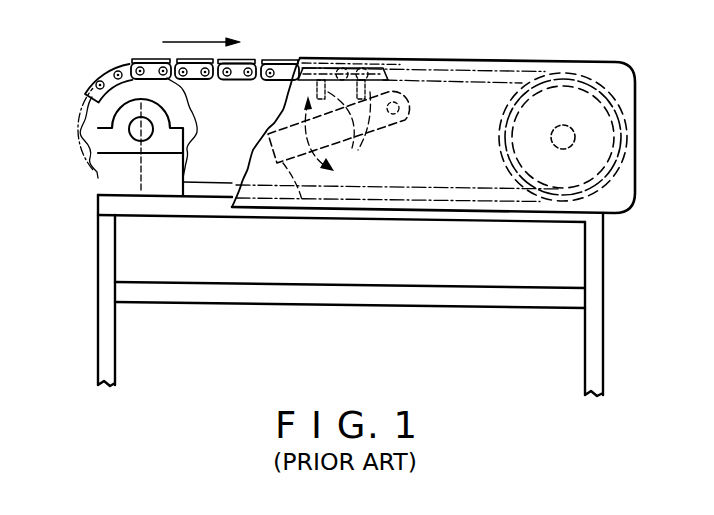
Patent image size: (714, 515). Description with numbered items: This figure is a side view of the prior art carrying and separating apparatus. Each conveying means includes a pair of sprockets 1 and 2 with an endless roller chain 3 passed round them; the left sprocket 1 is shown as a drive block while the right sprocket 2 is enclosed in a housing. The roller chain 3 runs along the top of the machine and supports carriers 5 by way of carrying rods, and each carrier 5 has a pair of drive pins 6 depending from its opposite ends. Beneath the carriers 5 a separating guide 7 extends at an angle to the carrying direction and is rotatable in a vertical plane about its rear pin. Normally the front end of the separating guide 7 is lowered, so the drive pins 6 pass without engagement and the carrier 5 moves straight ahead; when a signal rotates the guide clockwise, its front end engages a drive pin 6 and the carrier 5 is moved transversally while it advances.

The sprocket 1 is at (83, 128).
The sprocket 2 is at (620, 104).
The endless roller chain 3 is at (232, 82).
The carrier 5 is at (263, 60).
The drive pin 6 is at (355, 143).
The separating guide 7 is at (302, 200).